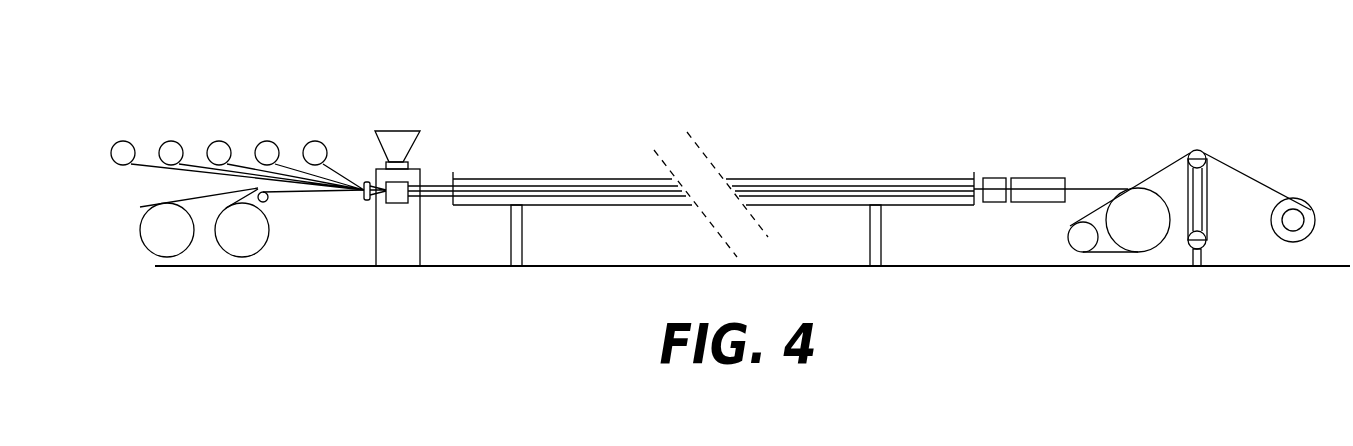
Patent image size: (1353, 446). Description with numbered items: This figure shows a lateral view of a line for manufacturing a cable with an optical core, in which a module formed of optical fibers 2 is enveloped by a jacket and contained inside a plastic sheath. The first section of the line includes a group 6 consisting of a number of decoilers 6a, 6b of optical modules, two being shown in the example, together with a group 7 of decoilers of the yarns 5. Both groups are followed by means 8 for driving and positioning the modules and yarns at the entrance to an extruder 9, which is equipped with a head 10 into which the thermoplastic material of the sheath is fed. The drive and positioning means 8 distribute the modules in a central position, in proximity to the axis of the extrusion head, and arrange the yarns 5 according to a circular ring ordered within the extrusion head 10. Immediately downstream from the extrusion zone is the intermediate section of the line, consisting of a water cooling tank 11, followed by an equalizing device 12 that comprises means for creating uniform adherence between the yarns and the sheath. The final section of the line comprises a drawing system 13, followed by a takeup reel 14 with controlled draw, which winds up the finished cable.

The optical fibers 2 is at (306, 193).
The yarns 5 is at (333, 168).
The group of decoilers of optical modules 6 is at (190, 268).
The decoiler 6a is at (150, 240).
The decoiler 6b is at (240, 245).
The group of decoilers of the yarns 7 is at (184, 108).
The means for driving and positioning 8 is at (366, 205).
The extruder 9 is at (420, 148).
The head 10 is at (395, 199).
The water cooling tank 11 is at (600, 197).
The equalizing device 12 is at (1022, 165).
The drawing system 13 is at (1140, 243).
The takeup reel 14 is at (1293, 237).